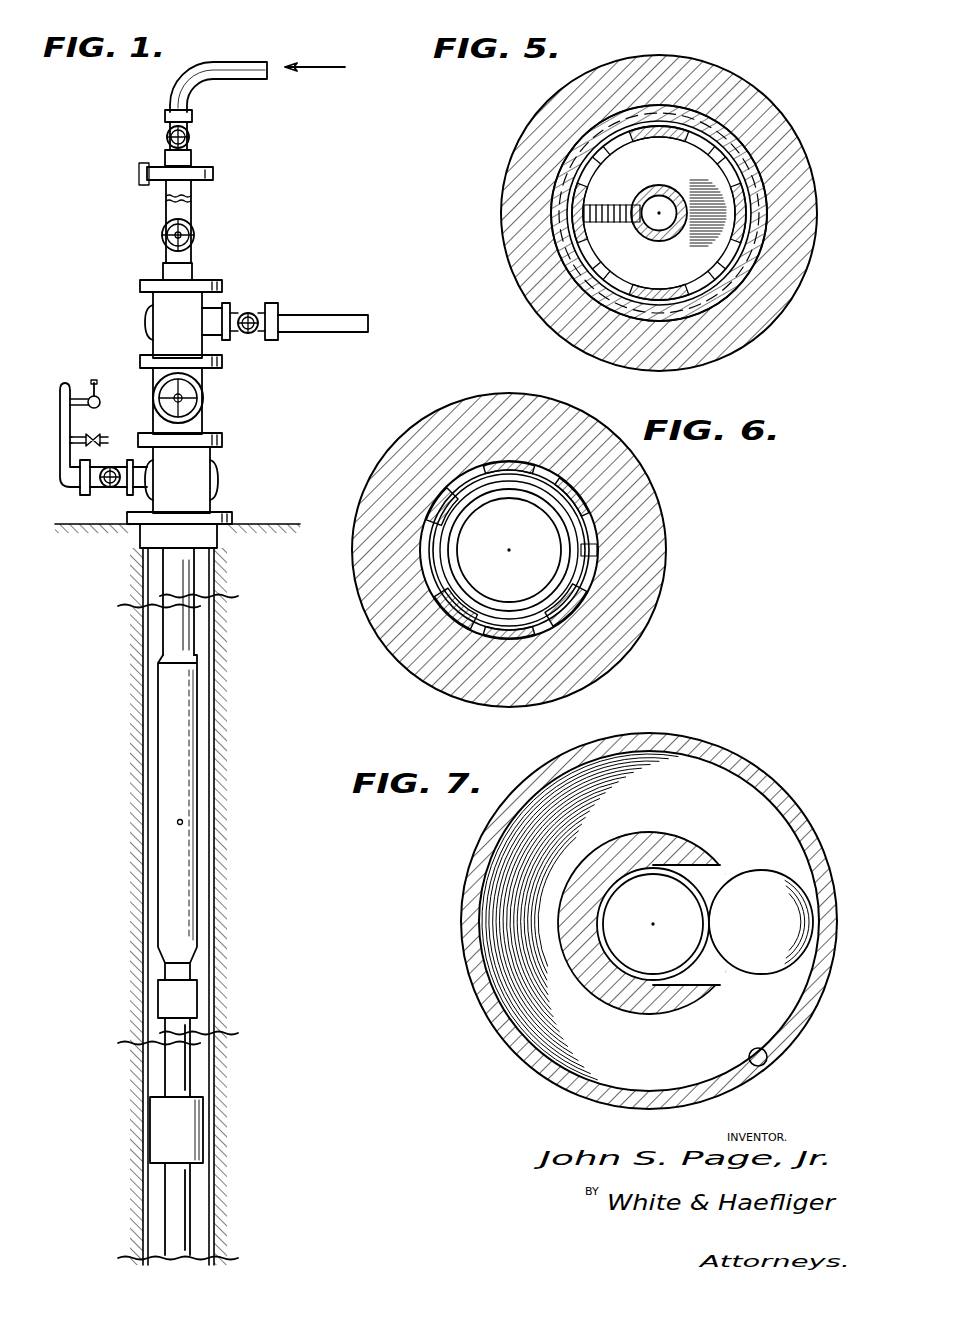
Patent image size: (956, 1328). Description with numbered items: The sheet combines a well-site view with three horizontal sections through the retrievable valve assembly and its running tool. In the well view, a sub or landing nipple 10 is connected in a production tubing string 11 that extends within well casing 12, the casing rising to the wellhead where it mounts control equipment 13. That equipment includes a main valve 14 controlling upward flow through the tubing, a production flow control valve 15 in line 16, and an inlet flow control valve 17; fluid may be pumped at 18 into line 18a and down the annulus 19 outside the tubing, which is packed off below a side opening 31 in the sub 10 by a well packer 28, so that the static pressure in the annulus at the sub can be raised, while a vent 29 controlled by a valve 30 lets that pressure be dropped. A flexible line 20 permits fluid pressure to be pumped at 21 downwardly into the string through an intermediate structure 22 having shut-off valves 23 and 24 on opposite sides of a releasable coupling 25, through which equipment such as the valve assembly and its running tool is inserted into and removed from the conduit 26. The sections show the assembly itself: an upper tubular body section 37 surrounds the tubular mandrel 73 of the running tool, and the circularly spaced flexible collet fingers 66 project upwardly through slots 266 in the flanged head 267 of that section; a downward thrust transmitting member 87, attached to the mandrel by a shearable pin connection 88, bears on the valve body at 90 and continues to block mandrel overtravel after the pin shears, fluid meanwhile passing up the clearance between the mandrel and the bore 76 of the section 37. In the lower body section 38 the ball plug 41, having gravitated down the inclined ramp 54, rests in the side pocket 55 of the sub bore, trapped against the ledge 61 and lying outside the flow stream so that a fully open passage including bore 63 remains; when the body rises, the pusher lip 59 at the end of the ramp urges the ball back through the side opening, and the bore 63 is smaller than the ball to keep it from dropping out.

In FIG. 1, the sub or landing nipple 10 is at (175, 957).
In FIG. 5, the sub or landing nipple 10 is at (500, 142).
In FIG. 6, the sub or landing nipple 10 is at (668, 518).
In FIG. 7, the sub or landing nipple 10 is at (758, 765).
In FIG. 1, the production tubing string 11 is at (168, 637).
In FIG. 1, the well casing 12 is at (150, 718).
In FIG. 1, the control equipment 13 is at (262, 354).
In FIG. 1, the main valve 14 is at (204, 400).
In FIG. 1, the production flow control valve 15 is at (251, 312).
In FIG. 1, the line 16 is at (333, 320).
In FIG. 1, the inlet flow control valve 17 is at (100, 490).
In FIG. 1, the pump 18 is at (100, 395).
In FIG. 1, the line 18a is at (80, 492).
In FIG. 1, the annulus 19 is at (208, 640).
In FIG. 1, the flexible line 20 is at (187, 82).
In FIG. 1, the pumping point 21 is at (323, 77).
In FIG. 1, the intermediate structure 22 is at (238, 120).
In FIG. 1, the shut-off valve 23 is at (166, 136).
In FIG. 1, the shut-off valve 24 is at (166, 238).
In FIG. 1, the releasable coupling 25 is at (137, 177).
In FIG. 1, the conduit 26 is at (166, 256).
In FIG. 1, the well packer 28 is at (157, 1134).
In FIG. 1, the vent 29 is at (104, 434).
In FIG. 1, the valve 30 is at (100, 440).
In FIG. 1, the side inlet or opening 31 is at (177, 822).
In FIG. 5, the upper tubular body section 37 is at (553, 216).
In FIG. 7, the lower tubular body section 38 is at (668, 842).
In FIG. 7, the ball plug 41 is at (780, 935).
In FIG. 7, the ramp 54 is at (697, 945).
In FIG. 7, the side pocket 55 is at (767, 1062).
In FIG. 7, the pusher lip 59 is at (713, 883).
In FIG. 7, the ledge 61 is at (773, 990).
In FIG. 7, the bore 63 is at (600, 910).
In FIG. 5, the flexible fingers 66 is at (722, 177).
In FIG. 6, the flexible fingers 66 is at (503, 462).
In FIG. 5, the tubular mandrel 73 is at (660, 242).
In FIG. 6, the bore 76 is at (552, 530).
In FIG. 5, the downward thrust transmitting member 87 is at (686, 250).
In FIG. 5, the shearable pin connection 88 is at (602, 207).
In FIG. 6, the engagement 90 is at (455, 542).
In FIG. 6, the slots 266 is at (560, 611).
In FIG. 6, the flanged head 267 is at (598, 560).